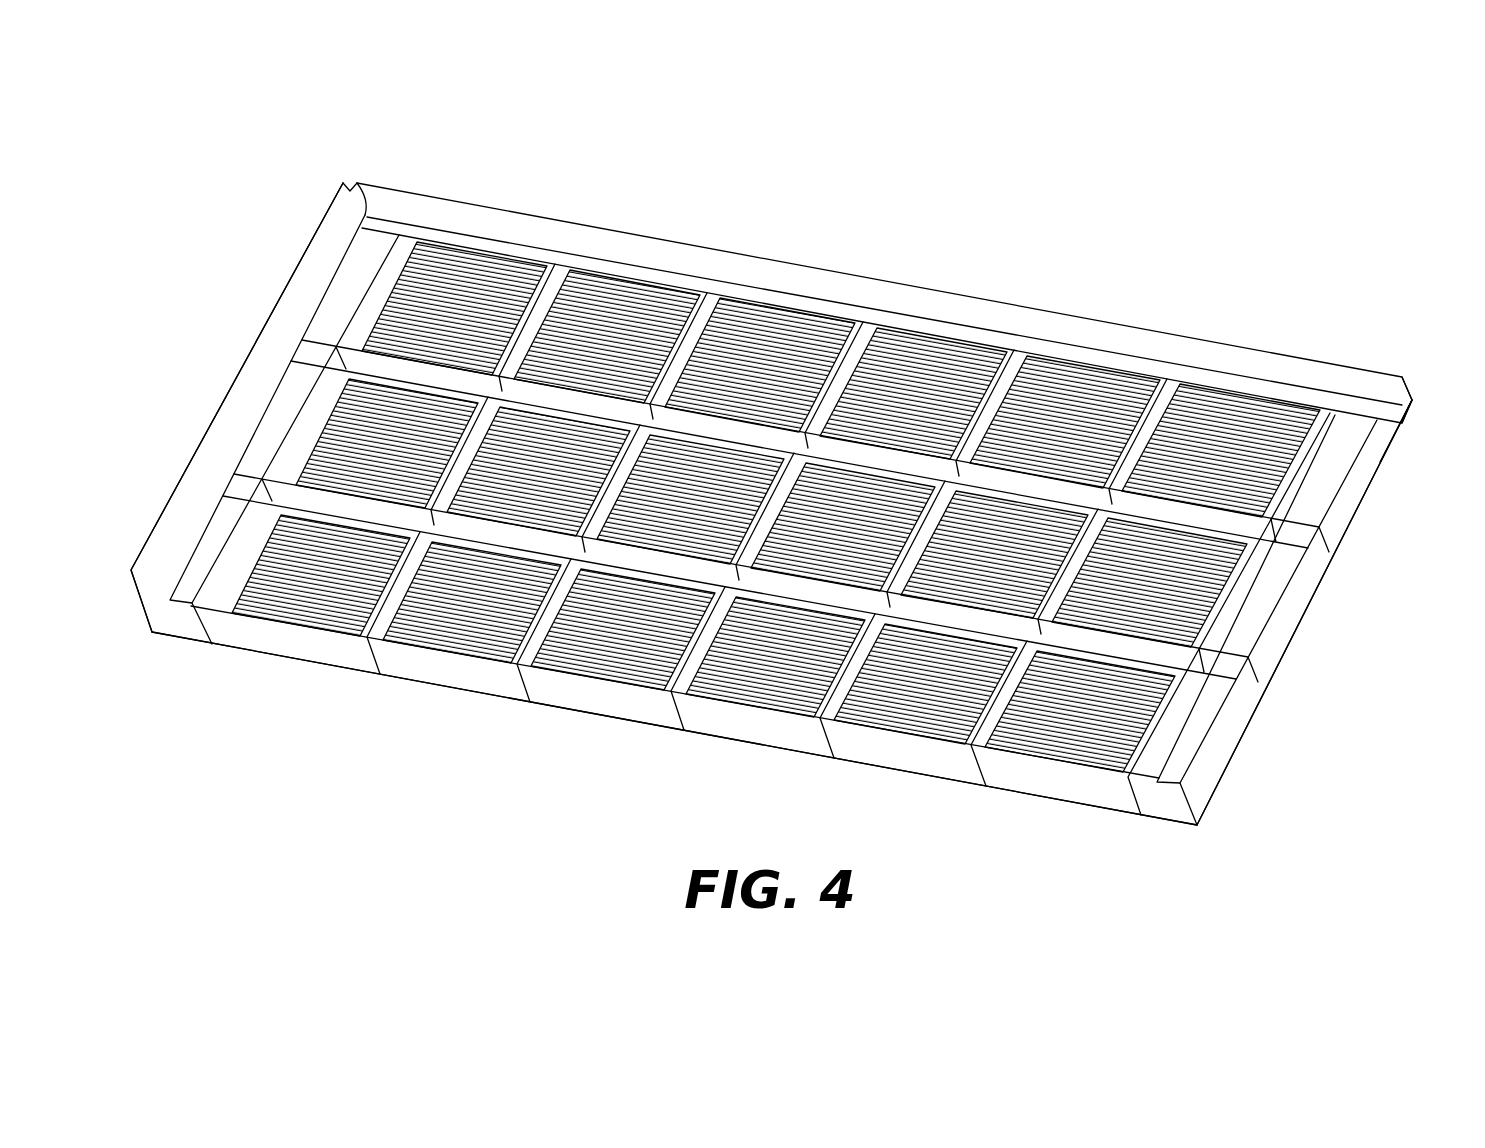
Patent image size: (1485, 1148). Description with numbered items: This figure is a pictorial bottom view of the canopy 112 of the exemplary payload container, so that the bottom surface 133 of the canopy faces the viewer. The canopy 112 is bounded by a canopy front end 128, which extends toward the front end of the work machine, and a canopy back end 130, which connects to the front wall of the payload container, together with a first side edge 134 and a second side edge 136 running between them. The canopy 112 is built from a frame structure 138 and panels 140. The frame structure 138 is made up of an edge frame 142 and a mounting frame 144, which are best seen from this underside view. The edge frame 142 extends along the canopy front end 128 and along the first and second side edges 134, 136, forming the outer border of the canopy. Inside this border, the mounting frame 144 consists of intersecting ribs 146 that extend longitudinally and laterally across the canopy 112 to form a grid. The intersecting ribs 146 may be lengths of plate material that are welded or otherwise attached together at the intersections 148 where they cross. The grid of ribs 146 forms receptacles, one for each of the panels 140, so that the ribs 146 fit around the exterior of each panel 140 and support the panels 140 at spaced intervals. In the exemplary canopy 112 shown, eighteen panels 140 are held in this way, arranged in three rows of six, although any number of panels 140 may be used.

The canopy 112 is at (1264, 150).
The canopy front end 128 is at (918, 248).
The canopy back end 130 is at (688, 754).
The bottom surface 133 is at (511, 718).
The first side edge 134 is at (1346, 637).
The second side edge 136 is at (184, 396).
The frame structure 138 is at (291, 310).
The panels 140 is at (487, 282).
The edge frame 142 is at (1388, 456).
The mounting frame 144 is at (864, 653).
The intersecting ribs 146 is at (1003, 630).
The intersections 148 is at (705, 586).